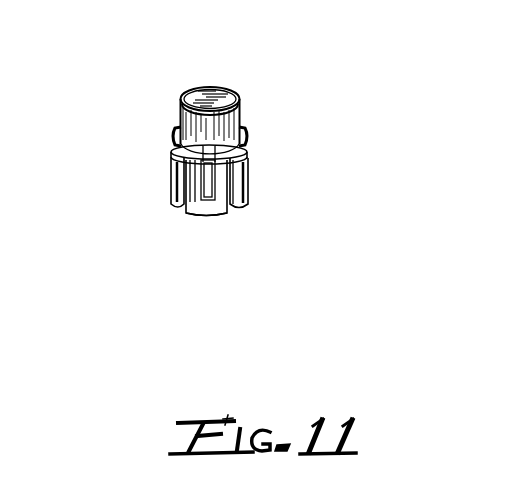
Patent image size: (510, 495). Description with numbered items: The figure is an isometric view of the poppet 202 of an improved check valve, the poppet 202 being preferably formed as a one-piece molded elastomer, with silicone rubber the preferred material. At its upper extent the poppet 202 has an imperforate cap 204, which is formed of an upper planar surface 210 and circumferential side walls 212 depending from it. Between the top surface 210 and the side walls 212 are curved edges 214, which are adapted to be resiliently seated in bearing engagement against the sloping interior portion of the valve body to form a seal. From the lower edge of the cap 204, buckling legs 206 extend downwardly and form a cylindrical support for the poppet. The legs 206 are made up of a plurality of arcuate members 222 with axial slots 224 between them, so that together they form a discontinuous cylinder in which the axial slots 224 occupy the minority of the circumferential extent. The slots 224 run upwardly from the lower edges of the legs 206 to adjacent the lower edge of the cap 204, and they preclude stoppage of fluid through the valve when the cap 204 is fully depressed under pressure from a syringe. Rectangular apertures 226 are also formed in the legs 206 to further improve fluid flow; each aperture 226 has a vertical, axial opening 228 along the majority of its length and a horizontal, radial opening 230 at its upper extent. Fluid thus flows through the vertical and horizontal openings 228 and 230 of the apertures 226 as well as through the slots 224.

The poppet 202 is at (249, 128).
The imperforate cap 204 is at (244, 127).
The buckling legs 206 is at (250, 178).
The upper planar surface 210 is at (216, 96).
The circumferential side walls 212 is at (179, 121).
The curved edges 214 is at (180, 103).
The arcuate members 222 is at (249, 210).
The axial slots 224 is at (187, 210).
The rectangular apertures 226 is at (200, 173).
The vertical axial openings 228 is at (205, 185).
The horizontal radial openings 230 is at (173, 150).